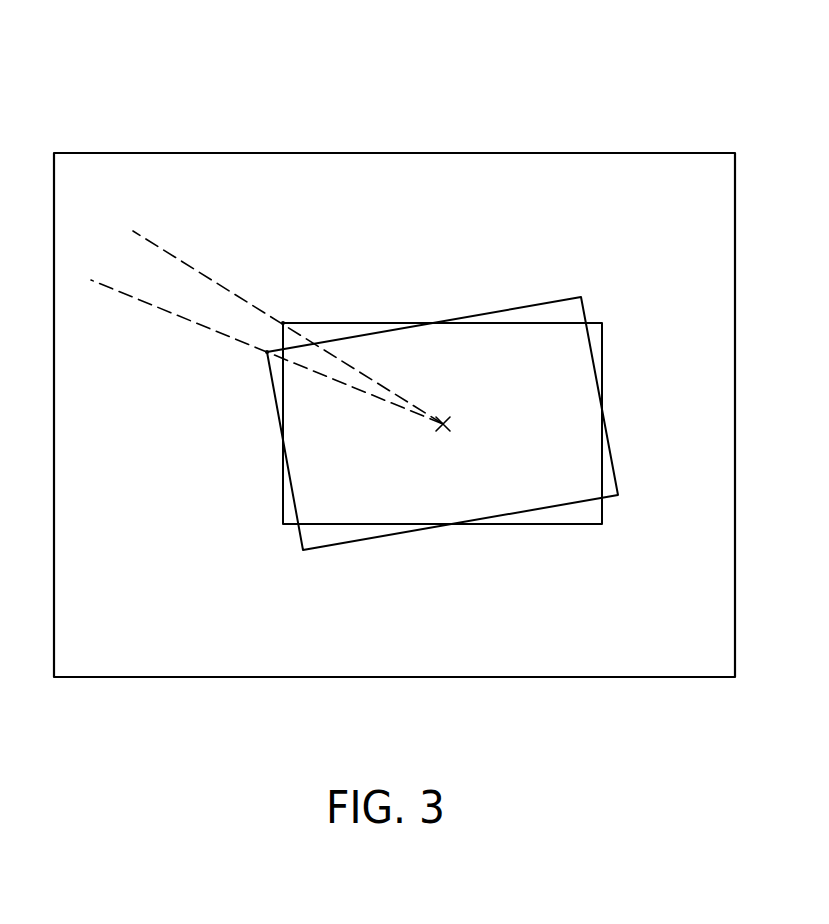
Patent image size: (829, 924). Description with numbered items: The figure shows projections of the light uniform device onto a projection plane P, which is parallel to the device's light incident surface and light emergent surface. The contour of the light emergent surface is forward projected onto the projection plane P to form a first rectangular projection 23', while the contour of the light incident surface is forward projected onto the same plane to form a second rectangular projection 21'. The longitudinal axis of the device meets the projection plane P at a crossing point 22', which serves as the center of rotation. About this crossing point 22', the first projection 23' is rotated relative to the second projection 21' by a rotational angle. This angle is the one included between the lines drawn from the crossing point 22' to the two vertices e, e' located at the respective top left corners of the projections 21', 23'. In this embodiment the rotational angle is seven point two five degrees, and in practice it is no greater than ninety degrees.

The projection plane P is at (274, 153).
The second rectangular projection 21' is at (469, 468).
The crossing point 22' is at (468, 397).
The first rectangular projection 23' is at (427, 464).
The vertex e is at (302, 298).
The vertex e' is at (249, 385).